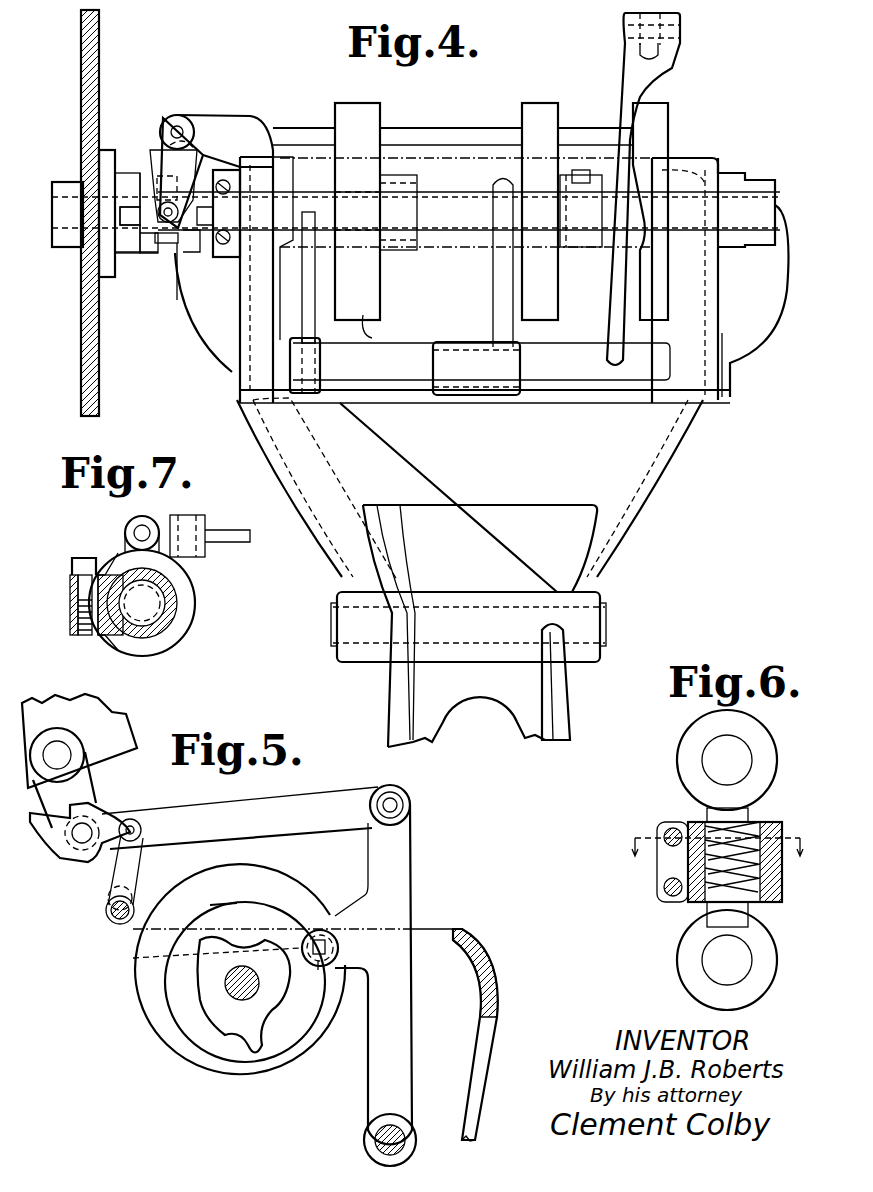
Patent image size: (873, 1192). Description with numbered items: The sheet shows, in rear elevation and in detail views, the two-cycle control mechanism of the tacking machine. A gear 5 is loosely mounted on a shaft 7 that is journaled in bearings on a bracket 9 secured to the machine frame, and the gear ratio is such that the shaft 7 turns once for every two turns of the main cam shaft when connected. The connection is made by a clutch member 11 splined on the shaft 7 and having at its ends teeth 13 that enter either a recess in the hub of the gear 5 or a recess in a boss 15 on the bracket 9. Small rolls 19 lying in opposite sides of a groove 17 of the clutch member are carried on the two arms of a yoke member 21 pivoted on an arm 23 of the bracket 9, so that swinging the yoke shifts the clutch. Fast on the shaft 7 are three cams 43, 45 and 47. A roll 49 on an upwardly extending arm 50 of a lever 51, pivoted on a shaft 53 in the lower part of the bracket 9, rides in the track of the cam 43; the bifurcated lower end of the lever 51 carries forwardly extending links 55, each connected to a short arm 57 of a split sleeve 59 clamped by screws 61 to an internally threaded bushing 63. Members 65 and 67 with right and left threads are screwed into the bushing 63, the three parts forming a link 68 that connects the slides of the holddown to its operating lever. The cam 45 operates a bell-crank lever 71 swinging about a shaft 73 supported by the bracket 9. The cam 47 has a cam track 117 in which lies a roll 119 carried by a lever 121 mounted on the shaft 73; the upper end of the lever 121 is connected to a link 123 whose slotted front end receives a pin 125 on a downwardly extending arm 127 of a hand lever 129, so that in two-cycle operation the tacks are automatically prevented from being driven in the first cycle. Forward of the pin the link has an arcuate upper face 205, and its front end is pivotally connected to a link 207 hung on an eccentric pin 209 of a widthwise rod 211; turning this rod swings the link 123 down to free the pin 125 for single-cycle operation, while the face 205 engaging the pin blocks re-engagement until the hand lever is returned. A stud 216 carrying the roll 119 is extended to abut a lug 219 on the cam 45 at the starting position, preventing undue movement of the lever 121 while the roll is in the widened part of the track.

In FIG. 4, the gear 5 is at (99, 381).
In FIG. 4, the shaft 7 is at (448, 195).
In FIG. 5, the shaft 7 is at (255, 975).
In FIG. 4, the bracket 9 is at (262, 466).
In FIG. 4, the clutch member 11 is at (145, 255).
In FIG. 4, the teeth 13 is at (130, 225).
In FIG. 4, the boss 15 is at (222, 257).
In FIG. 4, the groove 17 is at (163, 245).
In FIG. 4, the rolls 19 is at (155, 155).
In FIG. 4, the yoke member 21 is at (190, 165).
In FIG. 4, the arm 23 is at (250, 117).
In FIG. 4, the cam 43 is at (375, 329).
In FIG. 4, the cam 45 is at (545, 320).
In FIG. 4, the cam 47 is at (660, 290).
In FIG. 5, the cam 47 is at (150, 1010).
In FIG. 4, the roll 49 is at (350, 185).
In FIG. 4, the arm 50 is at (322, 300).
In FIG. 4, the lever 51 is at (390, 690).
In FIG. 4, the shaft 53 is at (575, 635).
In FIG. 7, the link 55 is at (245, 540).
In FIG. 7, the arm 57 is at (128, 545).
In FIG. 7, the split sleeve 59 is at (192, 600).
In FIG. 6, the split sleeve 59 is at (765, 880).
In FIG. 7, the screws 61 is at (78, 585).
In FIG. 6, the screws 61 is at (668, 895).
In FIG. 7, the bushing 63 is at (170, 620).
In FIG. 6, the bushing 63 is at (762, 895).
In FIG. 6, the member 65 is at (715, 815).
In FIG. 6, the member 67 is at (715, 912).
In FIG. 6, the link 68 is at (678, 760).
In FIG. 4, the bell-crank lever 71 is at (493, 283).
In FIG. 4, the shaft 73 is at (412, 345).
In FIG. 5, the shaft 73 is at (370, 1138).
In FIG. 5, the cam track 117 is at (212, 1015).
In FIG. 5, the roll 119 is at (318, 970).
In FIG. 4, the lever 121 is at (610, 283).
In FIG. 5, the lever 121 is at (413, 1030).
In FIG. 5, the link 123 is at (322, 792).
In FIG. 5, the pin 125 is at (74, 840).
In FIG. 5, the arm 127 is at (85, 778).
In FIG. 5, the hand lever 129 is at (98, 728).
In FIG. 5, the arcuate upper face 205 is at (40, 810).
In FIG. 5, the link 207 is at (137, 865).
In FIG. 5, the eccentric pin 209 is at (132, 890).
In FIG. 5, the rod 211 is at (112, 915).
In FIG. 4, the stud 216 is at (583, 170).
In FIG. 5, the stud 216 is at (325, 938).
In FIG. 4, the lug 219 is at (557, 195).
In FIG. 5, the lug 219 is at (314, 940).